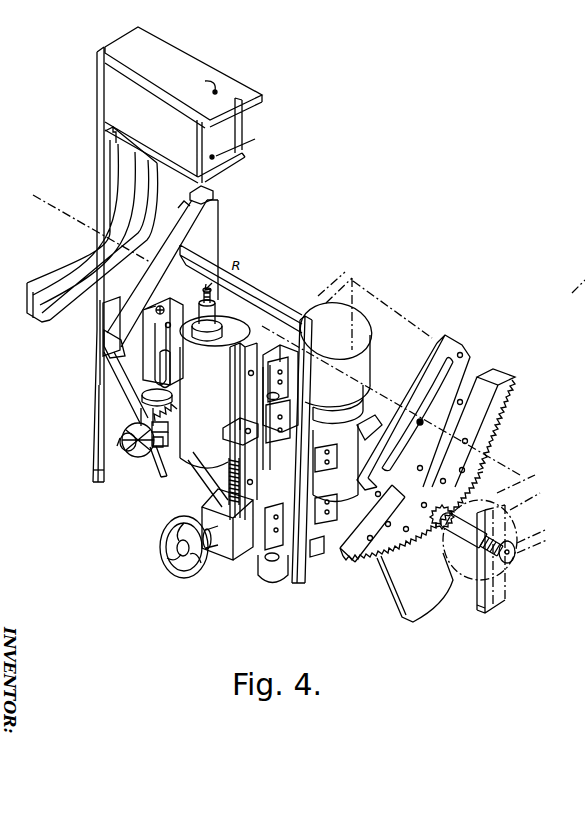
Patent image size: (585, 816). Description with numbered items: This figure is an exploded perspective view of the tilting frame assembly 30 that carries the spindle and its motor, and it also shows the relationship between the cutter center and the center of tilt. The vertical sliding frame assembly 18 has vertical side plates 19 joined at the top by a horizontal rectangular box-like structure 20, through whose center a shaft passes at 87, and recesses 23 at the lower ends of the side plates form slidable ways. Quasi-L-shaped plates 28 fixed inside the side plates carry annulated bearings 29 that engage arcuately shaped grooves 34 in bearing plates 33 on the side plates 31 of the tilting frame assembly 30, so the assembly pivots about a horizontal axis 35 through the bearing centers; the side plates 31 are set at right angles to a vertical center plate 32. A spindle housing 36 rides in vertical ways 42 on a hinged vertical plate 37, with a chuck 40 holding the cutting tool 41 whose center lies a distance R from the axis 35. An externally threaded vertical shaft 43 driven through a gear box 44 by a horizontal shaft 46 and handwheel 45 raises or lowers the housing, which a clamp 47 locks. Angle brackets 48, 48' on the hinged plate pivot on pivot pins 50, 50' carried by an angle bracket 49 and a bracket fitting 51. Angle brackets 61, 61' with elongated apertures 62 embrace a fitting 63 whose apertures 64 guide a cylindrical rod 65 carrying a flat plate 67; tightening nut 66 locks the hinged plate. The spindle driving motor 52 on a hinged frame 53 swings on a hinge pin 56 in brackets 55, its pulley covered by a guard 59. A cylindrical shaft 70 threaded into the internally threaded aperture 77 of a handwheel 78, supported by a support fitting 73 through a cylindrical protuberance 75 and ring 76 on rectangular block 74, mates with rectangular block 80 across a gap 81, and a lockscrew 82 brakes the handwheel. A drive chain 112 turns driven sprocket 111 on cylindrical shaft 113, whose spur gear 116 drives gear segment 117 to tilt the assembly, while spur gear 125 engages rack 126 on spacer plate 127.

The frame assembly 18 is at (86, 74).
The vertical side plates 19 is at (93, 378).
The horizontal rectangular box-like structure 20 is at (181, 55).
The recesses 23 is at (93, 465).
The quasi-L-shaped plates 28 is at (38, 325).
The annulated bearings 29 is at (134, 170).
The tilting frame assembly 30 is at (232, 257).
The side plates 31 is at (220, 212).
The vertical center plate 32 is at (240, 274).
The bearing plates 33 is at (208, 193).
The arcuately shaped grooves 34 is at (183, 206).
The horizontal axis 35 is at (30, 201).
The spindle housing 36 is at (210, 383).
The hinged vertical plate 37 is at (275, 357).
The chuck 40 is at (222, 309).
The cutting tool 41 is at (213, 296).
The vertical ways 42 is at (243, 465).
The externally threaded vertical shaft 43 is at (229, 481).
The gear box 44 is at (230, 541).
The handwheel 45 is at (195, 580).
The horizontal shaft 46 is at (176, 548).
The clamp 47 is at (229, 433).
The angle bracket 48 is at (298, 379).
The angle bracket 48' is at (283, 518).
The angle bracket 49 is at (283, 427).
The pivot pin 50 is at (299, 398).
The pivotal pin 50' is at (255, 570).
The bracket fitting 51 is at (272, 583).
The spindle driving motor 52 is at (362, 424).
The hinged frame 53 is at (315, 552).
The brackets 55 is at (352, 455).
The hinge pin 56 is at (331, 480).
The guard 59 is at (322, 340).
The angle bracket 61 is at (175, 287).
The angle bracket 61' is at (181, 369).
The elongated aperture 62 is at (140, 313).
The fitting 63 is at (157, 322).
The aperture 64 is at (147, 383).
The cylindrical rod 65 is at (155, 342).
The nut 66 is at (165, 299).
The flat plate 67 is at (172, 399).
The cylindrical shaft 70 is at (129, 451).
The support fitting 73 is at (130, 432).
The rectangular block 74 is at (170, 428).
The cylindrical protuberance 75 is at (135, 410).
The ring 76 is at (140, 412).
The internally threaded aperture 77 is at (118, 442).
The handwheel 78 is at (150, 460).
The rectangular block 80 is at (168, 441).
The gap 81 is at (168, 430).
The lockscrew 82 is at (156, 450).
The shaft passage 87 is at (229, 117).
The driven sprocket 111 is at (515, 508).
The drive chain 112 is at (528, 482).
The cylindrical shaft 113 is at (470, 538).
The spur gear 116 is at (458, 503).
The gear segment 117 is at (358, 549).
The spur gear 125 is at (517, 553).
The rack 126 is at (507, 580).
The spacer plate 127 is at (487, 610).